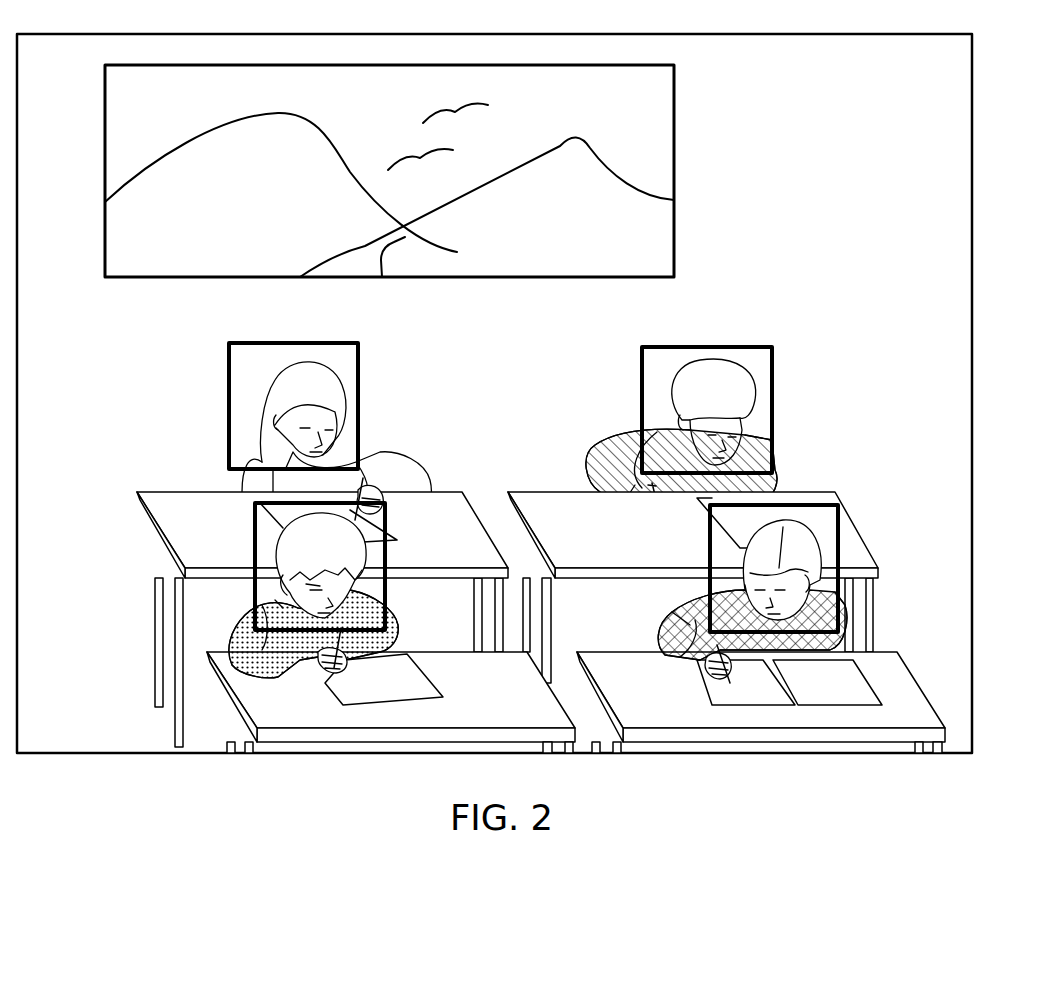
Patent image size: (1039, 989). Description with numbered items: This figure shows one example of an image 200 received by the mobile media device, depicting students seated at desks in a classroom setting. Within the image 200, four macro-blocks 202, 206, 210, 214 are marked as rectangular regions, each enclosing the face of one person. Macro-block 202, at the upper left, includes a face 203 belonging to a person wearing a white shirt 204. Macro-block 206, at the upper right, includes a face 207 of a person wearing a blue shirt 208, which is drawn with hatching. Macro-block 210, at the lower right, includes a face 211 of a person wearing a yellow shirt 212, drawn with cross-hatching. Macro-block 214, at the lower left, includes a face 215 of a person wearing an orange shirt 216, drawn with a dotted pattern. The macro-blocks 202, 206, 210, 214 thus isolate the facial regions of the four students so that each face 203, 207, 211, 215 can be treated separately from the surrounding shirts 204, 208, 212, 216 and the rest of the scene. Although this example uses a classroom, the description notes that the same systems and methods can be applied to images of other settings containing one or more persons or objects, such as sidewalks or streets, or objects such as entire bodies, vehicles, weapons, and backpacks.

The image 200 is at (972, 395).
The macro-block 202 is at (228, 393).
The face 203 is at (333, 433).
The white shirt 204 is at (253, 456).
The macro-block 206 is at (772, 387).
The face 207 is at (733, 438).
The blue shirt 208 is at (590, 477).
The macro-block 210 is at (842, 543).
The face 211 is at (842, 613).
The yellow shirt 212 is at (658, 640).
The macro-block 214 is at (255, 517).
The face 215 is at (278, 577).
The orange shirt 216 is at (390, 613).